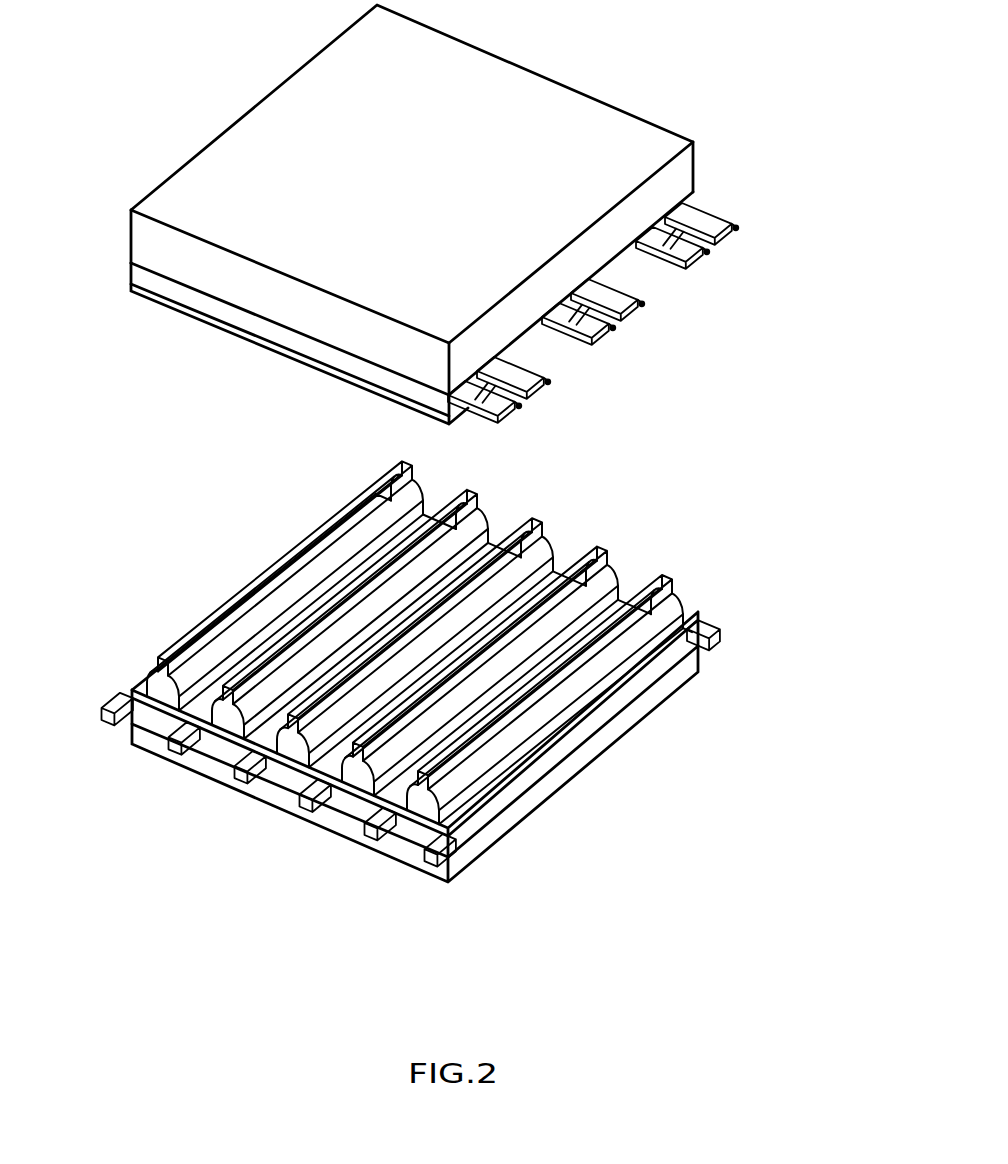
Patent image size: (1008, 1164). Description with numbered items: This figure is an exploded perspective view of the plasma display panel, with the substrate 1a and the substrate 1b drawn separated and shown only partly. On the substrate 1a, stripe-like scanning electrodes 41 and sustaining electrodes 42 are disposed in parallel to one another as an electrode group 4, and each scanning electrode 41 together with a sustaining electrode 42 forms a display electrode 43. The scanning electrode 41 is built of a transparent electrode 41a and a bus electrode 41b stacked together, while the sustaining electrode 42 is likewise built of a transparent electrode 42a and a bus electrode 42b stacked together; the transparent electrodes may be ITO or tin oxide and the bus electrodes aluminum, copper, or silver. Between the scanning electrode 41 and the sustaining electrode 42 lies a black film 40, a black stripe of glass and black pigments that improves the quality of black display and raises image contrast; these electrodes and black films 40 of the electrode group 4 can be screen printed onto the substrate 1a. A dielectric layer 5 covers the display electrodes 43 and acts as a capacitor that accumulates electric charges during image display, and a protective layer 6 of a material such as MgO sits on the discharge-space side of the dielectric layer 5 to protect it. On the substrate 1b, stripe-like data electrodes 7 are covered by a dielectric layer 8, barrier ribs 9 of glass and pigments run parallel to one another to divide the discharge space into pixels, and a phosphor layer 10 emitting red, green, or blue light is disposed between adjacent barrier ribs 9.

The substrate 1a is at (222, 163).
The substrate 1b is at (147, 738).
The electrode group 4 is at (649, 389).
The dielectric layer 5 is at (145, 277).
The protective layer 6 is at (180, 307).
The data electrodes 7 is at (178, 748).
The dielectric layer 8 is at (223, 740).
The barrier ribs 9 is at (293, 747).
The phosphor layer 10 is at (343, 763).
The black film 40 is at (588, 338).
The scanning electrode 41 is at (640, 301).
The transparent electrode 41a is at (637, 313).
The bus electrode 41b is at (647, 305).
The sustaining electrode 42 is at (596, 345).
The transparent electrode 42a is at (613, 330).
The bus electrode 42b is at (609, 338).
The display electrode 43 is at (642, 337).